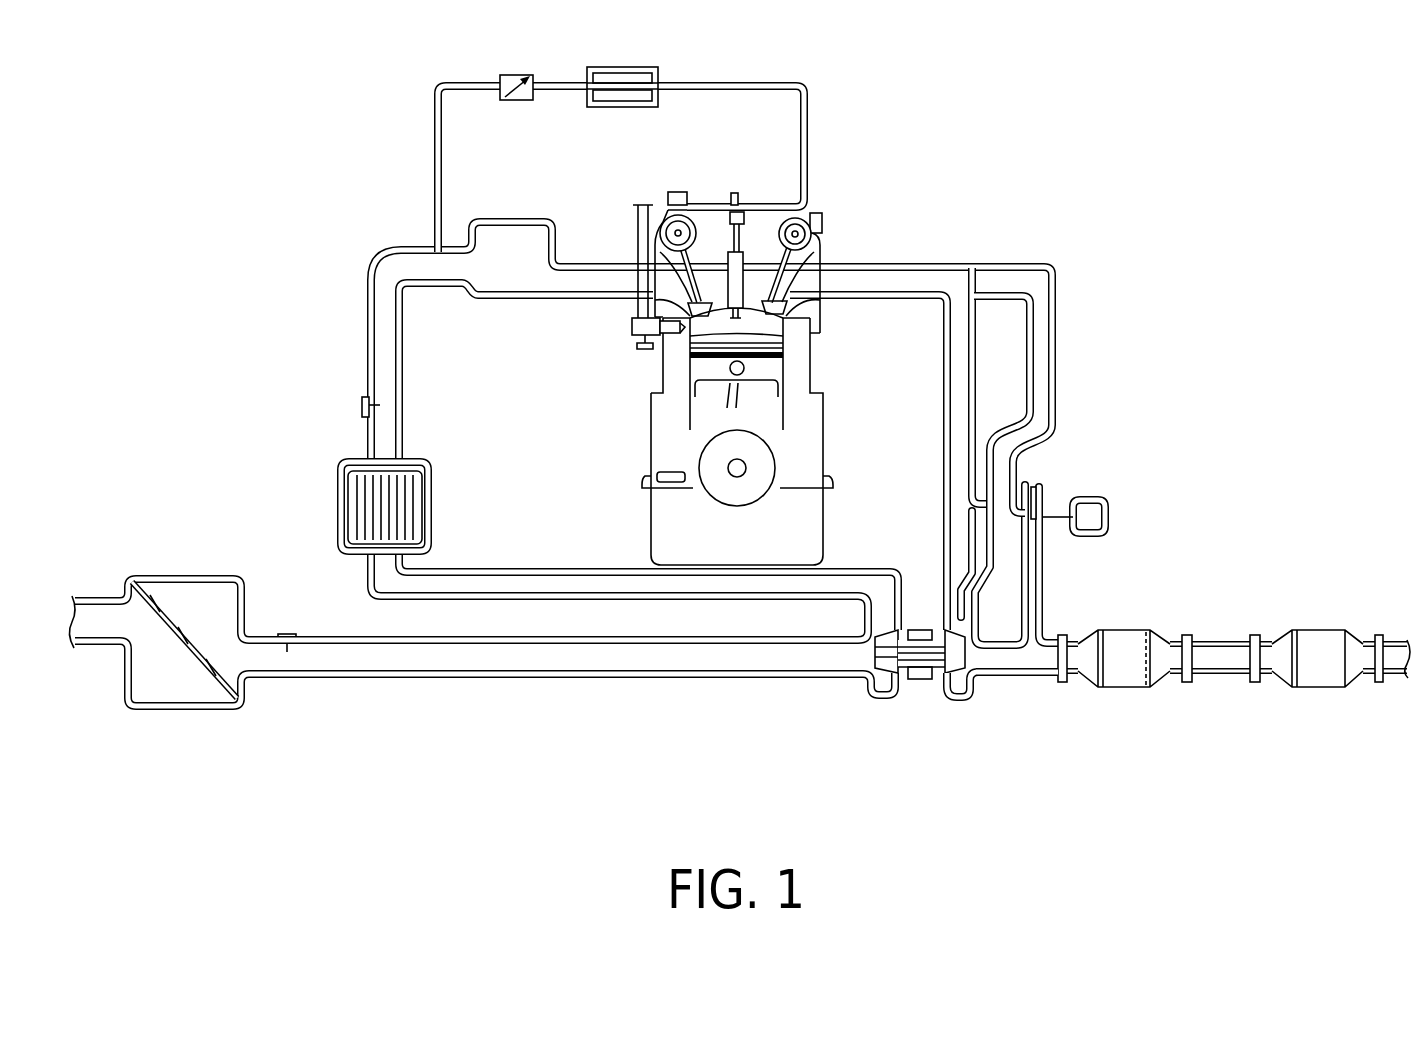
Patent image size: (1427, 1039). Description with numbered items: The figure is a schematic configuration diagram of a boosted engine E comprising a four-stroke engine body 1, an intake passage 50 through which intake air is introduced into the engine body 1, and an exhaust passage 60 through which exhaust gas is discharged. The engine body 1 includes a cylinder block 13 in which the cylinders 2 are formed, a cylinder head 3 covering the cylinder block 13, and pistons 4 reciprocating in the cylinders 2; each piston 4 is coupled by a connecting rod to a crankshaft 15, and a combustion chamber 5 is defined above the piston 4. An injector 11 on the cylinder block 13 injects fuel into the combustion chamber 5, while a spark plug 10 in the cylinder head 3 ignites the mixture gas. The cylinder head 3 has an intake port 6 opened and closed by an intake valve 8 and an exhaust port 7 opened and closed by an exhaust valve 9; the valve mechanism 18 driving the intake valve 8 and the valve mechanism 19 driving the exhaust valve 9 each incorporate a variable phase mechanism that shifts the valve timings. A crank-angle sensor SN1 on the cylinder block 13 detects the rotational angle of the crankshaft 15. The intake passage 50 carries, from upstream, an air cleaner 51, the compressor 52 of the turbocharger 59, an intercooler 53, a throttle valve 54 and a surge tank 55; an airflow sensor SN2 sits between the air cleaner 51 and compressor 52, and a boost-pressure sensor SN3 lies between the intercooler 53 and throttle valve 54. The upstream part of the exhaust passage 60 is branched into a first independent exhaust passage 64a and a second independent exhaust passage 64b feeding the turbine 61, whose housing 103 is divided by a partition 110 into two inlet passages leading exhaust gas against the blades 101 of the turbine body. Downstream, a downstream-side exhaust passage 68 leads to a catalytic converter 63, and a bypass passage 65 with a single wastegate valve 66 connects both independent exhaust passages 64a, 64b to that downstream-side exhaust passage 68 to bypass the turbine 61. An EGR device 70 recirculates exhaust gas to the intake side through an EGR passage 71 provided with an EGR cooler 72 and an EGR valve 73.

The engine E is at (739, 410).
The engine body 1 is at (727, 334).
The cylinder 2 is at (777, 369).
The cylinder head 3 is at (812, 254).
The piston 4 is at (805, 365).
The combustion chamber 5 is at (772, 341).
The intake port 6 is at (658, 262).
The exhaust port 7 is at (808, 298).
The intake valve 8 is at (668, 297).
The exhaust valve 9 is at (803, 330).
The spark plug 10 is at (746, 230).
The injector 11 is at (670, 355).
The cylinder block 13 is at (807, 430).
The crankshaft 15 is at (747, 468).
The valve mechanism 18 is at (665, 212).
The valve mechanism 19 is at (797, 205).
The crank-angle sensor SN1 is at (660, 477).
The intake passage 50 is at (556, 462).
The air cleaner 51 is at (185, 709).
The compressor 52 is at (875, 697).
The intercooler 53 is at (434, 497).
The throttle valve 54 is at (376, 339).
The surge tank 55 is at (502, 222).
The airflow sensor SN2 is at (284, 632).
The boost-pressure sensor SN3 is at (362, 407).
The turbocharger 59 is at (986, 723).
The exhaust passage 60 is at (1185, 544).
The turbine 61 is at (1045, 722).
The catalytic converter 63 is at (1133, 638).
The first independent exhaust passage 64a is at (985, 364).
The second independent exhaust passage 64b is at (1048, 450).
The bypass passage 65 is at (1046, 583).
The wastegate valve 66 is at (1040, 490).
The downstream-side exhaust passage 68 is at (1003, 646).
The EGR device 70 is at (674, 126).
The EGR passage 71 is at (707, 82).
The EGR cooler 72 is at (625, 67).
The EGR valve 73 is at (513, 77).
The blades 101 is at (1005, 690).
The partition 110 is at (978, 692).
The turbine housing 103 is at (952, 705).